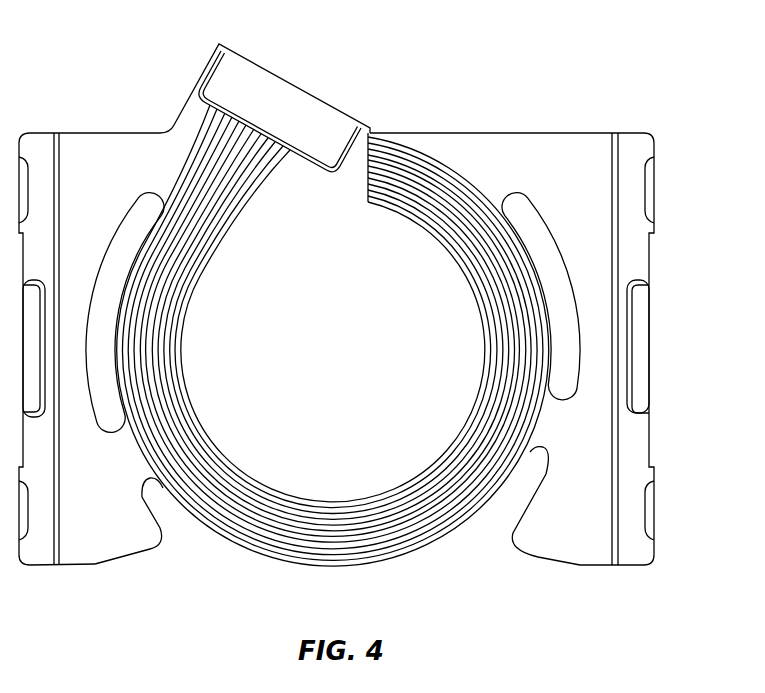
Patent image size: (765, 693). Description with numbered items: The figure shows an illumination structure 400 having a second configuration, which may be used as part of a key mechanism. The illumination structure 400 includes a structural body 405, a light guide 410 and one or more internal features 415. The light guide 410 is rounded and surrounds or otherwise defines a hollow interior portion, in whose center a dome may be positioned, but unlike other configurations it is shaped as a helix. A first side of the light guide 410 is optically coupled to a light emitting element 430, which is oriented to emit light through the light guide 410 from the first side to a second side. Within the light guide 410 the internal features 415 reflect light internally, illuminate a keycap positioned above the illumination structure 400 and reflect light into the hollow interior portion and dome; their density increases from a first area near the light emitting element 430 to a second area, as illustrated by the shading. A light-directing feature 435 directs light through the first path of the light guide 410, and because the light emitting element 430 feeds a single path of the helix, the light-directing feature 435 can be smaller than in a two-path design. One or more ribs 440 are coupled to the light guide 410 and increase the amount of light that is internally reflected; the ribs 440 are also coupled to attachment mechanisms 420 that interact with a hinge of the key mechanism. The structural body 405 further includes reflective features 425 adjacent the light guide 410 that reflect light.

The illumination structure 400 is at (50, 64).
The structural body 405 is at (511, 131).
The light guide 410 is at (333, 349).
The internal feature 415 is at (246, 540).
The attachment mechanism 420 is at (655, 350).
The reflective feature 425 is at (577, 289).
The light emitting element 430 is at (305, 90).
The light-directing feature 435 is at (306, 184).
The rib 440 is at (555, 456).